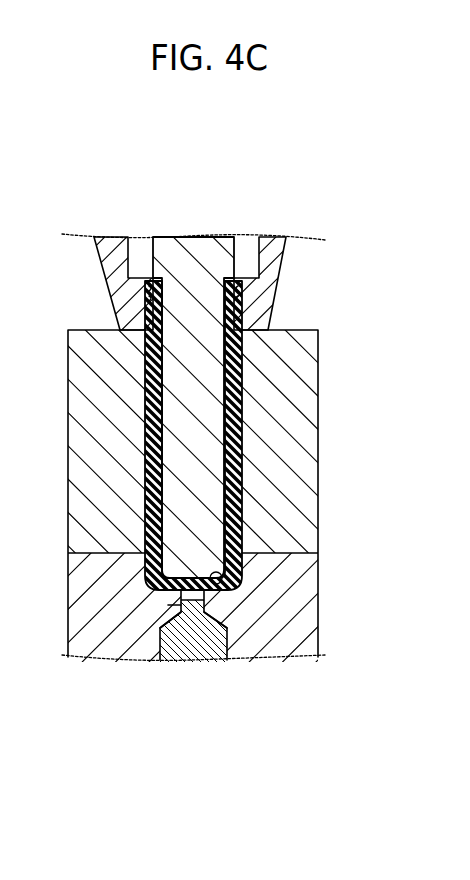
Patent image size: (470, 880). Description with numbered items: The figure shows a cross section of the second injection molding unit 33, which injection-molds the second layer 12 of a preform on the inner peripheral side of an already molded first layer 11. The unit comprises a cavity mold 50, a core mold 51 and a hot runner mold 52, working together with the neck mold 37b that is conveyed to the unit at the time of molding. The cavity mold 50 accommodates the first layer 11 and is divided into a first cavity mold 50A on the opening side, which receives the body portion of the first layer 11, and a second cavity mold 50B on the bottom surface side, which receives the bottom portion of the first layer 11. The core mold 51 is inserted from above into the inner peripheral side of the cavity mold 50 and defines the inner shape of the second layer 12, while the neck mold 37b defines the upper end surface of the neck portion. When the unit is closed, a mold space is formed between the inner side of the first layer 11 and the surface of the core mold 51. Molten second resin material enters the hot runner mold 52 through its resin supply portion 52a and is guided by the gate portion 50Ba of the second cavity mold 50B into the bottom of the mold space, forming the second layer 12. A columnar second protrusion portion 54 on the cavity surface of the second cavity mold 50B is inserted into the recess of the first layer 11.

The second injection molding unit 33 is at (289, 199).
The core mold 51 is at (235, 246).
The neck mold 37b is at (106, 282).
The first layer 11 is at (247, 381).
The second layer 12 is at (167, 416).
The cavity mold 50 is at (383, 433).
The first cavity mold 50A is at (320, 449).
The second cavity mold 50B is at (320, 603).
The gate portion 50Ba is at (170, 605).
The hot runner mold 52 is at (160, 632).
The resin supply portion 52a is at (190, 648).
The second protrusion portion 54 is at (239, 600).